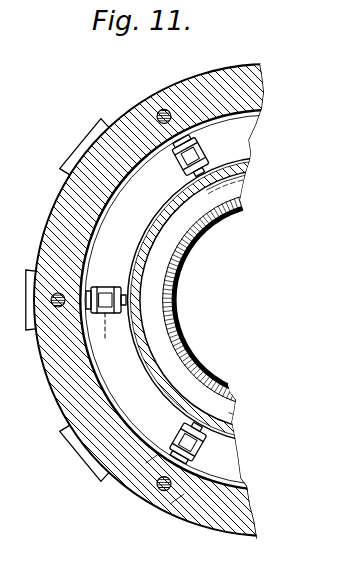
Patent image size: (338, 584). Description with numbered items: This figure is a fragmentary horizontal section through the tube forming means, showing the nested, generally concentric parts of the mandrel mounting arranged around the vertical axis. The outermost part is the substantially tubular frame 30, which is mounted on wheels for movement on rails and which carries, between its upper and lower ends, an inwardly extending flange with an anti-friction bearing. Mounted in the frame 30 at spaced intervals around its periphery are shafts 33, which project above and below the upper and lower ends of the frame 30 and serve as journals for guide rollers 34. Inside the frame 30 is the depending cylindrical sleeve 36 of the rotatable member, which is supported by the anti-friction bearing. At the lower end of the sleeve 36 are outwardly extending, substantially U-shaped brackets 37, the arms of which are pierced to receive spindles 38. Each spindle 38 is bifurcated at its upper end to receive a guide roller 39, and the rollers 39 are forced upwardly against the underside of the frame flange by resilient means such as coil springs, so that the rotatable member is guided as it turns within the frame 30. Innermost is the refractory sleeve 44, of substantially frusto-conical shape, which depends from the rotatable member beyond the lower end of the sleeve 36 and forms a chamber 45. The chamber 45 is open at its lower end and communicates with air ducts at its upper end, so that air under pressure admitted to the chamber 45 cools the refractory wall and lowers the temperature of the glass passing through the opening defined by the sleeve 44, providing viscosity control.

The tubular frame 30 is at (58, 385).
The shafts 33 is at (160, 106).
The guide rollers 34 is at (134, 478).
The cylindrical sleeve 36 is at (143, 267).
The U-shaped brackets 37 is at (123, 377).
The spindles 38 is at (109, 334).
The guide rollers 39 is at (179, 165).
The refractory sleeve 44 is at (200, 240).
The chamber 45 is at (230, 188).